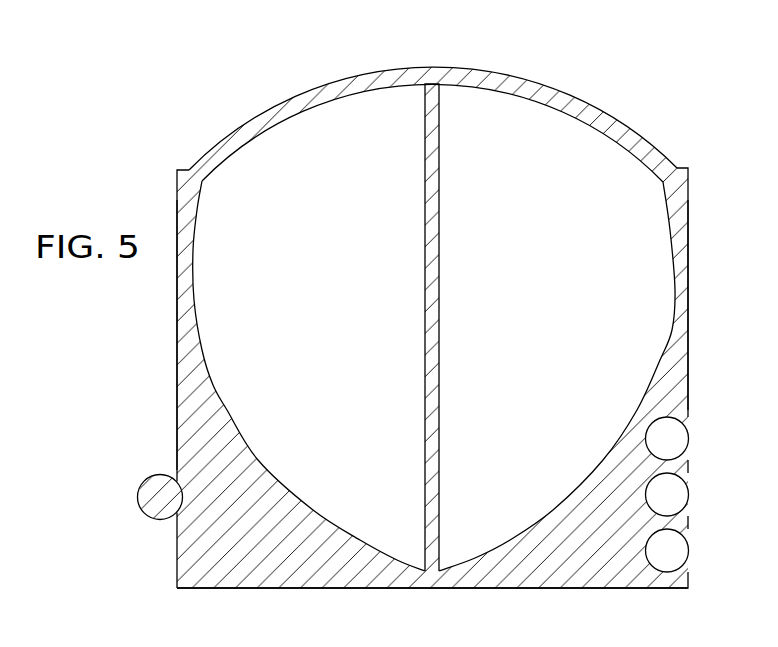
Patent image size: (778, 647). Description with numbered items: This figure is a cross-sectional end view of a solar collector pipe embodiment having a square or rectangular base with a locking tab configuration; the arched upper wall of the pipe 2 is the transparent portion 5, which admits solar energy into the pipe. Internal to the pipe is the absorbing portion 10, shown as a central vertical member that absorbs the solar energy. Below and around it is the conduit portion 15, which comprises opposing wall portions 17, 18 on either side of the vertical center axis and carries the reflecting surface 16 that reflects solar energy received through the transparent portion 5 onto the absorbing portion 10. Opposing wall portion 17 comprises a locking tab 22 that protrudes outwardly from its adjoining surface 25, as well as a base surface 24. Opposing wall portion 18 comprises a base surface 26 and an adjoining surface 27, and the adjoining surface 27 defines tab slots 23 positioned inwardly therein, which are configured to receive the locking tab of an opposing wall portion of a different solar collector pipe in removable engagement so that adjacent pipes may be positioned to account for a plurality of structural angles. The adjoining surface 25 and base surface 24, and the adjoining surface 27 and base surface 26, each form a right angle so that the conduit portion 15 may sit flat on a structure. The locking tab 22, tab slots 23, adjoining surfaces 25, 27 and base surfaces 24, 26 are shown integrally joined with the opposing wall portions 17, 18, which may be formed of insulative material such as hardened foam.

The arch body 2 is at (553, 78).
The transparent portion 5 is at (268, 109).
The absorbing portion 10 is at (425, 287).
The conduit portion 15 is at (157, 404).
The reflecting surface 16 is at (228, 410).
The opposing wall portion 17 is at (240, 548).
The opposing wall portion 18 is at (577, 543).
The locking tab 22 is at (148, 495).
The tab slot 23 is at (652, 442).
The base surface 24 is at (267, 590).
The adjoining surface 25 is at (177, 320).
The base surface 26 is at (543, 588).
The adjoining surface 27 is at (688, 287).